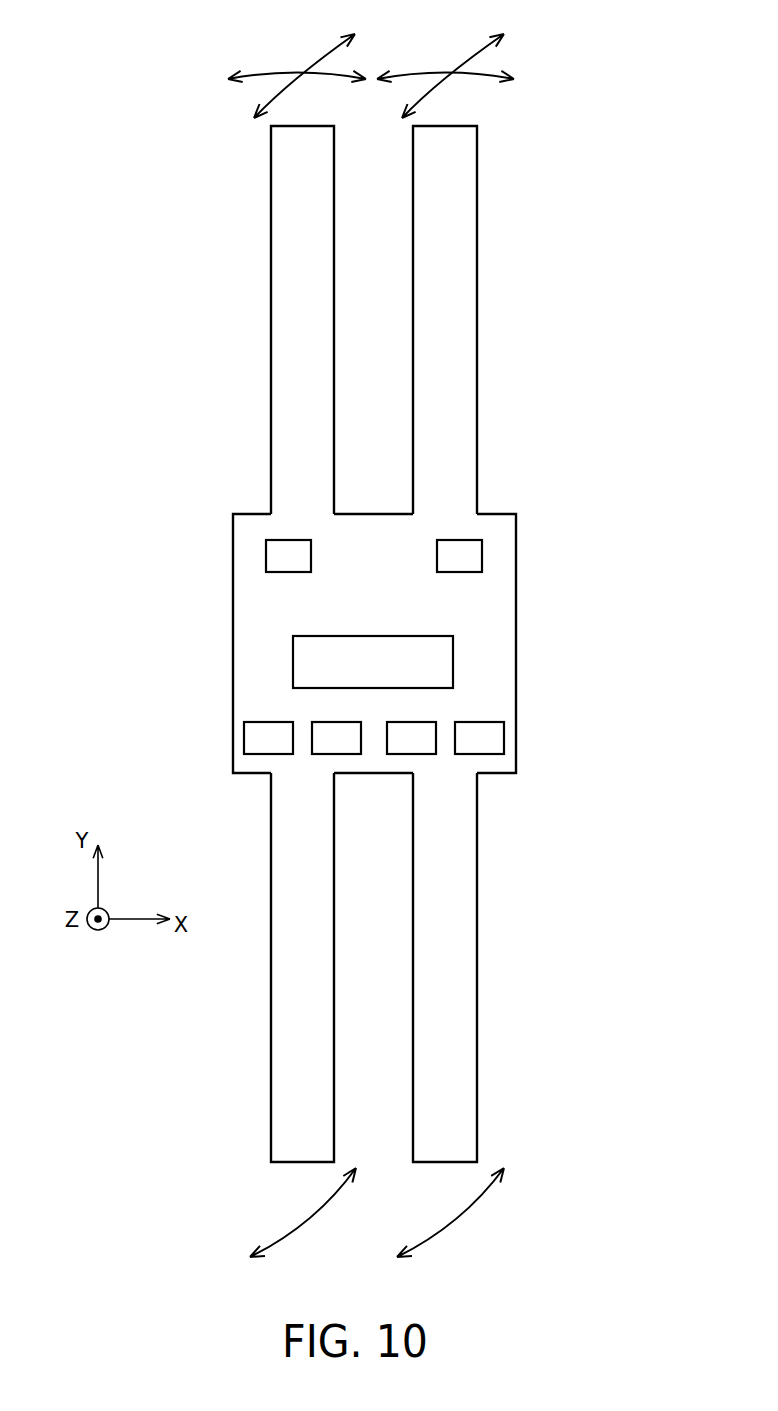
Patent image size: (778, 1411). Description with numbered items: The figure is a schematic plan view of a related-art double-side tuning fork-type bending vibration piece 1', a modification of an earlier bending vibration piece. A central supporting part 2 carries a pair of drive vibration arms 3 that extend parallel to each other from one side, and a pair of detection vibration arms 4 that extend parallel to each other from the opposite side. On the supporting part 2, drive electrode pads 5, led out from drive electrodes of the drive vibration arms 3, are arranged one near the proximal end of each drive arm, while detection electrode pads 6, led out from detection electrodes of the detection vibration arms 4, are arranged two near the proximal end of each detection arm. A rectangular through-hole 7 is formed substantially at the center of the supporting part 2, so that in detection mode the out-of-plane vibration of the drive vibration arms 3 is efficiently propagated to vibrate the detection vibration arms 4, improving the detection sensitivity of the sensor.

The bending vibration piece 1' is at (394, 644).
The supporting part 2 is at (510, 662).
The drive vibration arms 3 is at (276, 302).
The detection vibration arms 4 is at (277, 1022).
The drive electrode pads 5 is at (266, 557).
The detection electrode pads 6 is at (325, 722).
The rectangular through-hole 7 is at (314, 637).